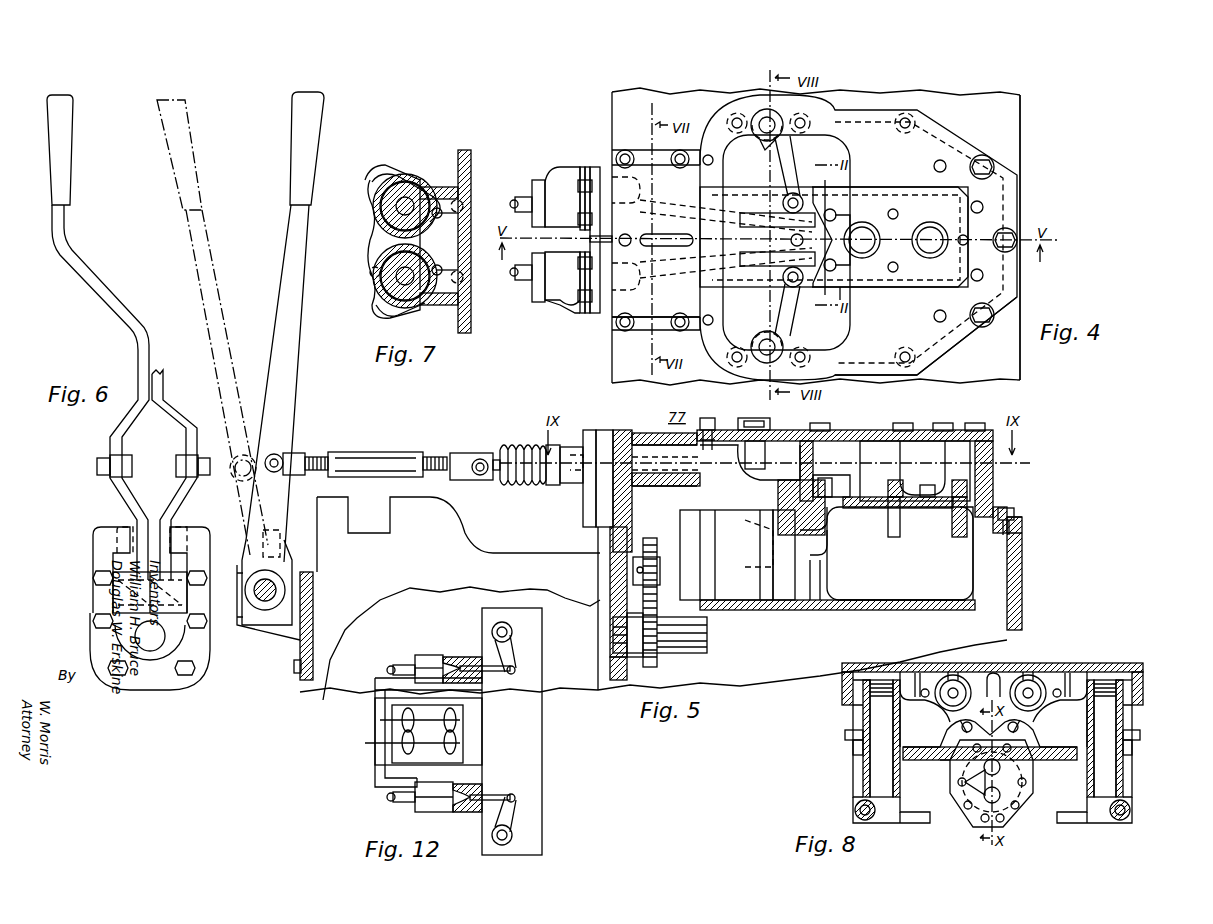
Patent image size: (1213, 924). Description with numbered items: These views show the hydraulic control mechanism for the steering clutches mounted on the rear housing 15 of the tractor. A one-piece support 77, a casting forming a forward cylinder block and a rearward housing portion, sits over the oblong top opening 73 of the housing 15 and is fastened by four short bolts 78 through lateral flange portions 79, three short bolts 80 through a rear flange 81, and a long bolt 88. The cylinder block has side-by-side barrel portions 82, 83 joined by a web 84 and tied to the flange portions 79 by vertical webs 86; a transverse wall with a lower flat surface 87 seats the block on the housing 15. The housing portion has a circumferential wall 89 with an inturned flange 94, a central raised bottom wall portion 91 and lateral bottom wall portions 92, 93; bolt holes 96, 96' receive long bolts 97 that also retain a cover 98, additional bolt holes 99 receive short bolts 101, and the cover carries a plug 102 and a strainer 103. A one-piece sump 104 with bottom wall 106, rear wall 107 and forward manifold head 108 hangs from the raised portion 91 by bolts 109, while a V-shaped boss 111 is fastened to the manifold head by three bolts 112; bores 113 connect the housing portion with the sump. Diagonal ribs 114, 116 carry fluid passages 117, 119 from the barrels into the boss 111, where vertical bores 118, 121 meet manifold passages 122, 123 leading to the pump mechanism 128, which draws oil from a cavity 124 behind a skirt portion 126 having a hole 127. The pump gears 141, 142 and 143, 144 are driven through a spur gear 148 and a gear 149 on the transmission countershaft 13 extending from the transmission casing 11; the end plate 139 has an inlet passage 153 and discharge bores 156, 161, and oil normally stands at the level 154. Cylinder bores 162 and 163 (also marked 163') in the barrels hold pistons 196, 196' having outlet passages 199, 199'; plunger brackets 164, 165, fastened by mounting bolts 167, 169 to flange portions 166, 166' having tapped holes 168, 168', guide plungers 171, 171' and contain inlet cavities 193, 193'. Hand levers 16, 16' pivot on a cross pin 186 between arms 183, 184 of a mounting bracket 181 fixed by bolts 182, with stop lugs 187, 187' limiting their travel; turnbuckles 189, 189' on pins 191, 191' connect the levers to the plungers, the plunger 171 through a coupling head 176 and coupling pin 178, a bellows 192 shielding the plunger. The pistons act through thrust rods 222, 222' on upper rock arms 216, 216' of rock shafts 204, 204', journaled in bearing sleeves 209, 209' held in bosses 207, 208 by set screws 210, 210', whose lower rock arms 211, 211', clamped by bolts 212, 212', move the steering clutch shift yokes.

In FIG. 5, the transmission casing 11 is at (533, 553).
In FIG. 5, the transmission countershaft 13 is at (707, 640).
In FIG. 5, the rear housing 15 is at (1022, 570).
In FIG. 4, the rear housing 15 is at (1020, 135).
In FIG. 6, the hand lever 16 is at (98, 337).
In FIG. 5, the hand lever 16 is at (285, 327).
In FIG. 6, the hand lever 16' is at (177, 475).
In FIG. 5, the hand lever 16' is at (212, 327).
In FIG. 5, the oblong top opening 73 is at (997, 533).
In FIG. 4, the one-piece support 77 is at (858, 237).
In FIG. 8, the one-piece support 77 is at (1143, 695).
In FIG. 4, the short bolts 78 is at (625, 150).
In FIG. 7, the lateral flange portions 79 is at (470, 152).
In FIG. 4, the lateral flange portions 79 is at (660, 150).
In FIG. 5, the short bolts 80 is at (1006, 508).
In FIG. 4, the short bolts 80 is at (984, 158).
In FIG. 5, the flange 81 is at (1020, 525).
In FIG. 4, the flange 81 is at (1010, 302).
In FIG. 7, the barrel portion 82 is at (380, 206).
In FIG. 4, the barrel portion 82 is at (640, 165).
In FIG. 7, the barrel portion 83 is at (380, 281).
In FIG. 5, the barrel portion 83 is at (664, 441).
In FIG. 4, the barrel portion 83 is at (630, 330).
In FIG. 5, the web 84 is at (666, 465).
In FIG. 7, the vertical webs 86 is at (444, 186).
In FIG. 5, the lower flat surface 87 is at (648, 527).
In FIG. 5, the long bolt 88 is at (625, 430).
In FIG. 4, the long bolt 88 is at (590, 238).
In FIG. 5, the circumferential wall 89 is at (985, 441).
In FIG. 4, the circumferential wall 89 is at (904, 361).
In FIG. 4, the central raised bottom wall portion 91 is at (868, 297).
In FIG. 8, the central raised bottom wall portion 91 is at (942, 772).
In FIG. 4, the lateral bottom wall portion 92 is at (834, 216).
In FIG. 8, the lateral bottom wall portion 92 is at (1000, 737).
In FIG. 4, the lateral bottom wall portion 93 is at (890, 256).
In FIG. 8, the lateral bottom wall portion 93 is at (993, 737).
In FIG. 5, the inturned flange 94 is at (925, 441).
In FIG. 4, the inturned flange 94 is at (855, 140).
In FIG. 4, the bolt holes 96 is at (822, 106).
In FIG. 4, the bolt holes 96' is at (806, 359).
In FIG. 5, the long bolts 97 is at (820, 423).
In FIG. 5, the cover 98 is at (875, 441).
In FIG. 4, the additional bolt holes 99 is at (714, 160).
In FIG. 5, the short bolts 101 is at (707, 418).
In FIG. 5, the plug 102 is at (750, 418).
In FIG. 5, the strainer 103 is at (747, 455).
In FIG. 5, the one-piece sump 104 is at (845, 520).
In FIG. 12, the one-piece sump 104 is at (542, 740).
In FIG. 5, the bottom wall 106 is at (915, 600).
In FIG. 5, the rear wall 107 is at (974, 570).
In FIG. 5, the forward manifold head 108 is at (838, 538).
In FIG. 5, the bolts 109 is at (888, 492).
In FIG. 4, the bolts 109 is at (893, 209).
In FIG. 5, the V-shaped boss 111 is at (833, 484).
In FIG. 4, the V-shaped boss 111 is at (836, 213).
In FIG. 5, the bolts 112 is at (806, 470).
In FIG. 4, the bolts 112 is at (795, 240).
In FIG. 5, the bores 113 is at (888, 520).
In FIG. 4, the bores 113 is at (925, 230).
In FIG. 7, the diagonal rib 114 is at (439, 219).
In FIG. 4, the diagonal rib 114 is at (735, 213).
In FIG. 8, the diagonal rib 114 is at (1020, 725).
In FIG. 7, the diagonal rib 116 is at (440, 266).
In FIG. 4, the diagonal rib 116 is at (732, 255).
In FIG. 8, the diagonal rib 116 is at (962, 725).
In FIG. 7, the fluid passage 117 is at (462, 213).
In FIG. 5, the fluid passage 117 is at (668, 472).
In FIG. 4, the fluid passage 117 is at (672, 210).
In FIG. 8, the fluid passage 117 is at (1023, 730).
In FIG. 5, the vertical bore 118 is at (840, 472).
In FIG. 4, the vertical bore 118 is at (842, 200).
In FIG. 7, the fluid passage 119 is at (462, 268).
In FIG. 4, the fluid passage 119 is at (670, 272).
In FIG. 8, the fluid passage 119 is at (957, 730).
In FIG. 4, the vertical bore 121 is at (865, 250).
In FIG. 5, the internal passage 122 is at (746, 530).
In FIG. 5, the internal passage 123 is at (746, 564).
In FIG. 5, the cavity 124 is at (778, 595).
In FIG. 5, the skirt portion 126 is at (830, 555).
In FIG. 5, the hole 127 is at (822, 578).
In FIG. 12, the hole 127 is at (480, 765).
In FIG. 5, the pump mechanism 128 is at (726, 555).
In FIG. 8, the end plate 139 is at (1012, 810).
In FIG. 12, the pump gear 141 is at (456, 746).
In FIG. 12, the pump gear 142 is at (450, 712).
In FIG. 12, the pump gear 143 is at (395, 748).
In FIG. 12, the pump gear 144 is at (404, 715).
In FIG. 5, the spur gear 148 is at (655, 587).
In FIG. 5, the gear 149 is at (657, 655).
In FIG. 8, the fluid inlet passage 153 is at (960, 790).
In FIG. 5, the oil level line 154 is at (933, 485).
In FIG. 8, the axial through bore 156 is at (1002, 795).
In FIG. 8, the axial through-bore 161 is at (1002, 770).
In FIG. 4, the cylinder bore 162 is at (645, 190).
In FIG. 8, the cylinder bore 162 is at (1040, 682).
In FIG. 12, the cylinder bore 162 is at (437, 655).
In FIG. 8, the cylinder bore 163 is at (965, 678).
In FIG. 12, the cylinder bore 163 is at (426, 812).
In FIG. 4, the valve piston 163' is at (651, 289).
In FIG. 5, the plunger bracket 164 is at (548, 478).
In FIG. 4, the plunger bracket 164 is at (555, 164).
In FIG. 4, the plunger bracket 165 is at (550, 300).
In FIG. 7, the flange portion 166 is at (406, 186).
In FIG. 5, the flange portion 166 is at (607, 467).
In FIG. 4, the flange portion 166 is at (598, 184).
In FIG. 7, the flange portion 166' is at (385, 315).
In FIG. 4, the flange portion 166' is at (587, 301).
In FIG. 5, the mounting bolts 167 is at (586, 430).
In FIG. 4, the mounting bolts 167 is at (582, 167).
In FIG. 7, the blind tapped holes 168 is at (431, 178).
In FIG. 7, the blind tapped holes 168' is at (423, 270).
In FIG. 4, the mounting bolts 169 is at (573, 313).
In FIG. 4, the solid plunger 171 is at (526, 200).
In FIG. 12, the solid plunger 171 is at (396, 660).
In FIG. 4, the solid plunger 171' is at (522, 281).
In FIG. 12, the solid plunger 171' is at (396, 804).
In FIG. 5, the coupling head 176 is at (470, 480).
In FIG. 5, the coupling pin 178 is at (478, 458).
In FIG. 6, the mounting bracket 181 is at (200, 672).
In FIG. 5, the mounting bracket 181 is at (300, 655).
In FIG. 6, the bolts 182 is at (95, 621).
In FIG. 5, the bolts 182 is at (296, 676).
In FIG. 6, the vertical arm 183 is at (94, 546).
In FIG. 5, the vertical arm 183 is at (258, 632).
In FIG. 6, the vertical arm 184 is at (204, 560).
In FIG. 6, the cross pin 186 is at (93, 586).
In FIG. 5, the cross pin 186 is at (270, 605).
In FIG. 6, the stop lug 187 is at (115, 530).
In FIG. 5, the stop lug 187 is at (272, 540).
In FIG. 6, the stop lug 187' is at (189, 530).
In FIG. 6, the turnbuckle 189 is at (103, 455).
In FIG. 5, the turnbuckle 189 is at (376, 453).
In FIG. 6, the turnbuckle 189' is at (195, 449).
In FIG. 6, the pin 191 is at (89, 466).
In FIG. 5, the pin 191 is at (294, 452).
In FIG. 6, the pin 191' is at (209, 476).
In FIG. 5, the bellows 192 is at (518, 440).
In FIG. 5, the cavity 193 is at (564, 489).
In FIG. 4, the cavity 193 is at (573, 202).
In FIG. 12, the cavity 193 is at (416, 657).
In FIG. 4, the cavity 193' is at (572, 279).
In FIG. 12, the cavity 193' is at (419, 788).
In FIG. 12, the piston 196 is at (462, 659).
In FIG. 12, the piston 196' is at (462, 808).
In FIG. 8, the fluid passages 199 is at (1030, 659).
In FIG. 8, the fluid outlet passages 199' is at (943, 661).
In FIG. 4, the rock shaft 204 is at (757, 111).
In FIG. 8, the rock shaft 204 is at (1127, 738).
In FIG. 4, the rock shaft 204' is at (744, 362).
In FIG. 8, the rock shaft 204' is at (855, 738).
In FIG. 8, the boss 207 is at (1132, 712).
In FIG. 8, the boss 208 is at (853, 712).
In FIG. 8, the bearing sleeve 209 is at (1144, 756).
In FIG. 8, the bearing sleeve 209' is at (839, 757).
In FIG. 8, the set screw 210 is at (1149, 743).
In FIG. 8, the set screw 210' is at (838, 743).
In FIG. 8, the lower rock arm 211 is at (1090, 826).
In FIG. 8, the lower rock arm 211' is at (907, 826).
In FIG. 8, the clamping bolt 212 is at (1112, 810).
In FIG. 8, the clamping bolt 212' is at (870, 809).
In FIG. 4, the upper rock arm 216 is at (795, 174).
In FIG. 8, the upper rock arm 216 is at (1147, 680).
In FIG. 12, the upper rock arm 216 is at (516, 648).
In FIG. 4, the upper rock arm 216' is at (799, 301).
In FIG. 8, the upper rock arm 216' is at (836, 682).
In FIG. 12, the upper rock arm 216' is at (517, 820).
In FIG. 12, the thrust rod 222 is at (495, 678).
In FIG. 12, the thrust rod 222' is at (500, 783).